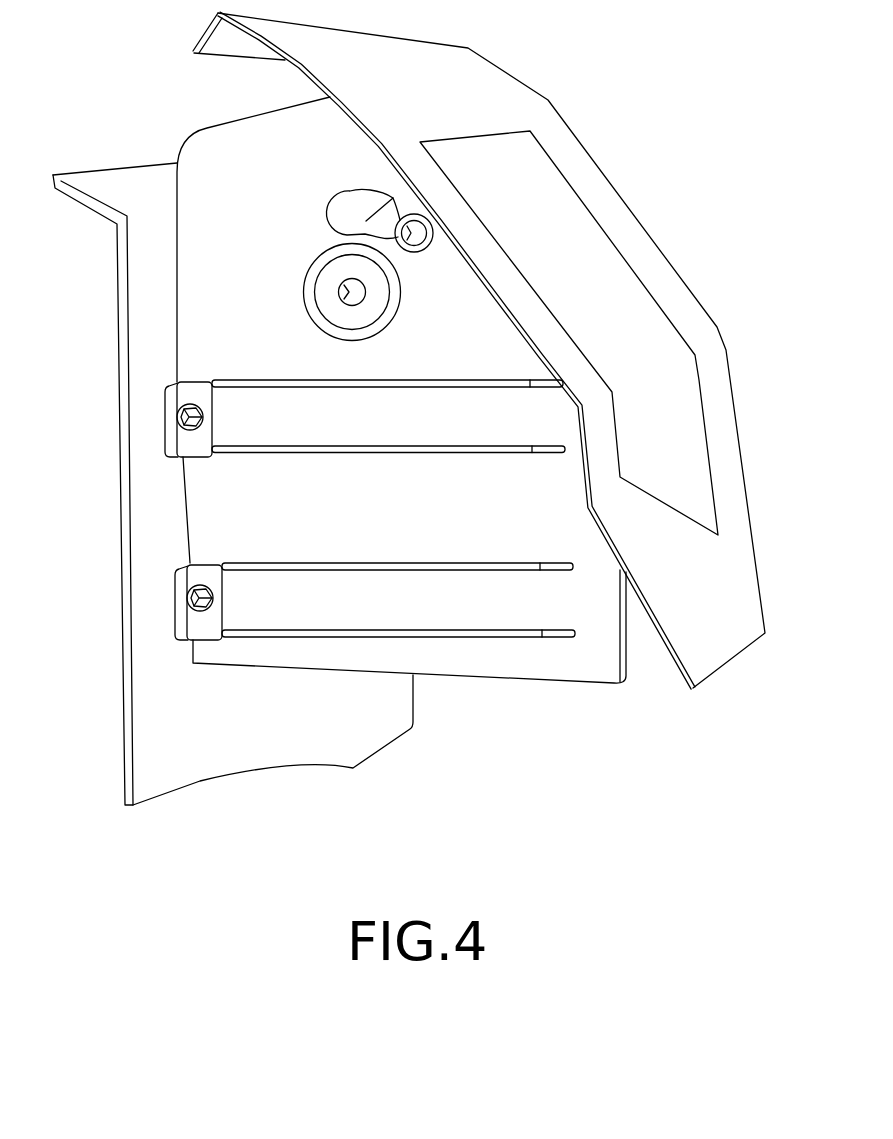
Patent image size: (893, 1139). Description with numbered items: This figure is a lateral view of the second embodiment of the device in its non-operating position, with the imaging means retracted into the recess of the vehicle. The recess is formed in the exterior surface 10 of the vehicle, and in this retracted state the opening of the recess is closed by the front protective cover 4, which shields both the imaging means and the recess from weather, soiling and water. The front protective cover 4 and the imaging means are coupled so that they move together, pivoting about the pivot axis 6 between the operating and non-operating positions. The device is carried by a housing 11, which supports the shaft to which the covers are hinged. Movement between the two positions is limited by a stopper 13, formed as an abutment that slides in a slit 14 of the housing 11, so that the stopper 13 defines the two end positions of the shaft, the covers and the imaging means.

The front protective cover 4 is at (610, 277).
The exterior surface 10 is at (573, 157).
The pivot axis 6 is at (345, 291).
The stopper 13 is at (425, 252).
The slit 14 is at (340, 205).
The housing 11 is at (548, 662).